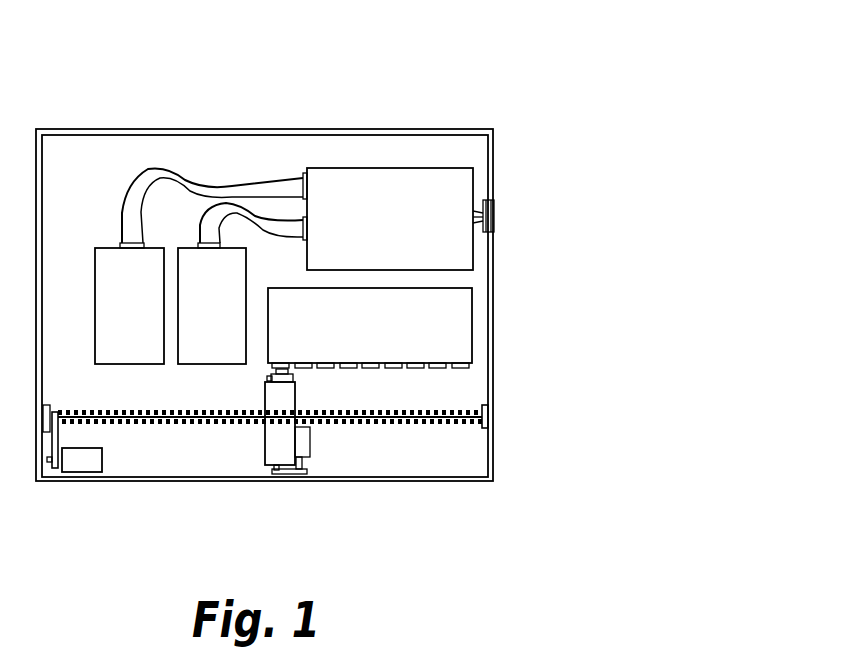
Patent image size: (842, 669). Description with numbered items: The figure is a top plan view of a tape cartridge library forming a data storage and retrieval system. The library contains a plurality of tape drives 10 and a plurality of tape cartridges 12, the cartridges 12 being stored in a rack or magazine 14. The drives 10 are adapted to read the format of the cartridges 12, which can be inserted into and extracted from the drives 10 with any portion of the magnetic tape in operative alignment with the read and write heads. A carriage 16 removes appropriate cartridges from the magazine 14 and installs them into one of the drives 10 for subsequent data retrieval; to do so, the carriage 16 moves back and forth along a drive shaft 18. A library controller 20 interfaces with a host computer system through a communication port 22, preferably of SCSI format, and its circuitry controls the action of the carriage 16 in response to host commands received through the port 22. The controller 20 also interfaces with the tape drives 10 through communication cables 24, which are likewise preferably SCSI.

The tape drive 10 is at (146, 322).
The tape cartridge 12 is at (367, 368).
The magazine 14 is at (455, 322).
The carriage 16 is at (277, 453).
The drive shaft 18 is at (148, 423).
The library controller 20 is at (410, 185).
The communication port 22 is at (497, 221).
The communication cables 24 is at (255, 212).